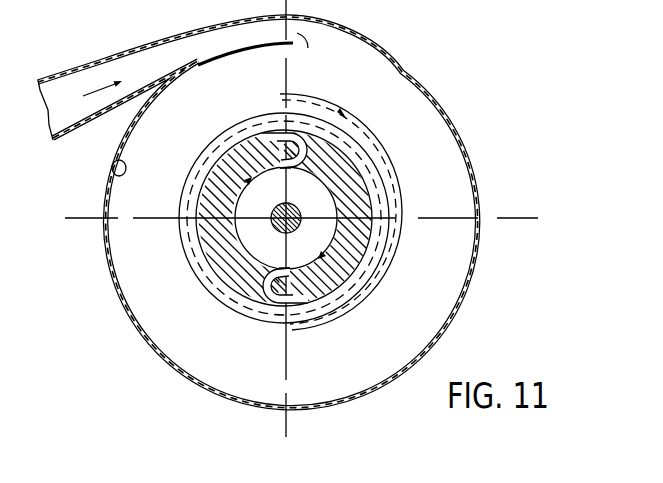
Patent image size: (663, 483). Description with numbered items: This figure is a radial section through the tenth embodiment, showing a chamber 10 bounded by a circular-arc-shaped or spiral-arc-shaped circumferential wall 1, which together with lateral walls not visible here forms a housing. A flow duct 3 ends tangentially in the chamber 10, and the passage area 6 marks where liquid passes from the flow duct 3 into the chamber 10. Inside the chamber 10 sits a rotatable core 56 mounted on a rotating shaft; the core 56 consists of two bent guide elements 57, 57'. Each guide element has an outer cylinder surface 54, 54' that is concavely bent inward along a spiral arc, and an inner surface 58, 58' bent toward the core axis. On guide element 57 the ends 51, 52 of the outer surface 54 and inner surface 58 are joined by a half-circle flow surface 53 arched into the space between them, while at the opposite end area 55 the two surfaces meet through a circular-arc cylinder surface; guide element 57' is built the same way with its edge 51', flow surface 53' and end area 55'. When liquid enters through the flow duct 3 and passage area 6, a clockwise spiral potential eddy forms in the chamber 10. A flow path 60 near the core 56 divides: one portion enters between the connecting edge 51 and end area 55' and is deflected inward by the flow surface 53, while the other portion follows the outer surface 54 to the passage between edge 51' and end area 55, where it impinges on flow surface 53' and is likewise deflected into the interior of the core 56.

The circumferential wall 1 is at (108, 176).
The flow duct 3 is at (68, 100).
The passage area 6 is at (263, 52).
The chamber 10 is at (142, 251).
The end of outer surface 51 is at (280, 120).
The end of outer surface 51' is at (294, 324).
The end of inner surface 52 is at (284, 218).
The flow surface 53 is at (239, 135).
The flow surface 53' is at (304, 265).
The outer cylinder surface 54 is at (355, 219).
The outer cylinder surface 54' is at (213, 218).
The end area 55 is at (313, 321).
The end area 55' is at (258, 124).
The rotatable core 56 is at (285, 215).
The guide element 57 is at (322, 241).
The guide element 57' is at (255, 241).
The inner surface 58 is at (301, 217).
The inner surface 58' is at (286, 218).
The flow path 60 is at (324, 108).